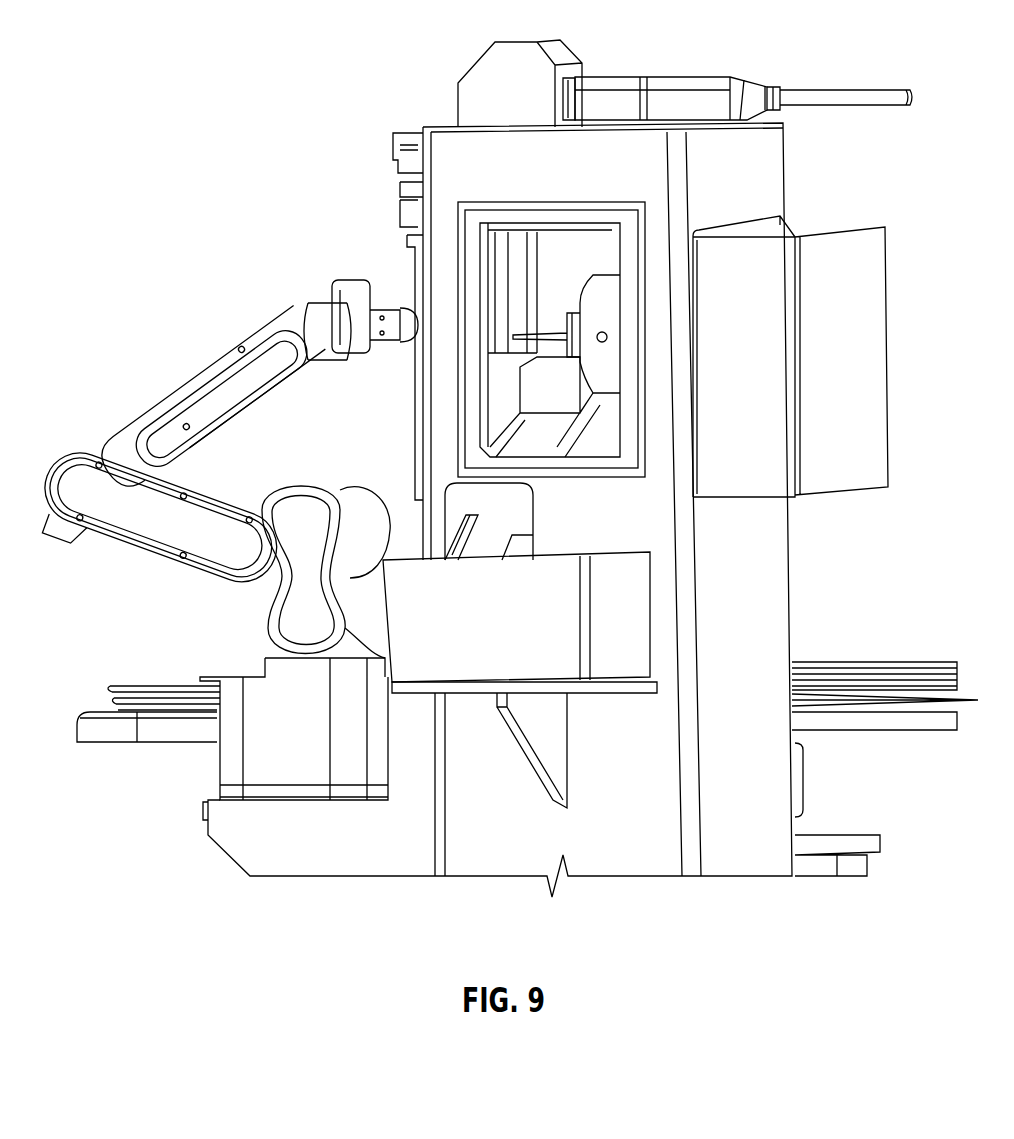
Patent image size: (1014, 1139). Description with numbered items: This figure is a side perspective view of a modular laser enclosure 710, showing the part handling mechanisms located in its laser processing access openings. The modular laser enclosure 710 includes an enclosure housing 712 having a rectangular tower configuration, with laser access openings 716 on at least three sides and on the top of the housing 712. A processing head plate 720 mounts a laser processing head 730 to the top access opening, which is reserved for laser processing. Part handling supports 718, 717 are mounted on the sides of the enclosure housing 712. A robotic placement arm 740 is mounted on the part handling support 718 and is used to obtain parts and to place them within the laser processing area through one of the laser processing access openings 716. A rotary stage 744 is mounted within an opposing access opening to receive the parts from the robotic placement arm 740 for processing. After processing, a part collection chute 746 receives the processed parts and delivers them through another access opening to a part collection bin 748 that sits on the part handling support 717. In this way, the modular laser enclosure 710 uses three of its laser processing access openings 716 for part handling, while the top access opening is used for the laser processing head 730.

The modular laser enclosure 710 is at (333, 233).
The enclosure housing 712 is at (780, 582).
The laser access openings 716 is at (395, 388).
The part handling support 717 is at (665, 685).
The part handling support 718 is at (202, 807).
The processing head plate 720 is at (668, 120).
The laser processing head 730 is at (449, 73).
The robotic placement arm 740 is at (195, 337).
The rotary stage 744 is at (592, 313).
The part collection chute 746 is at (527, 523).
The part collection bin 748 is at (645, 578).